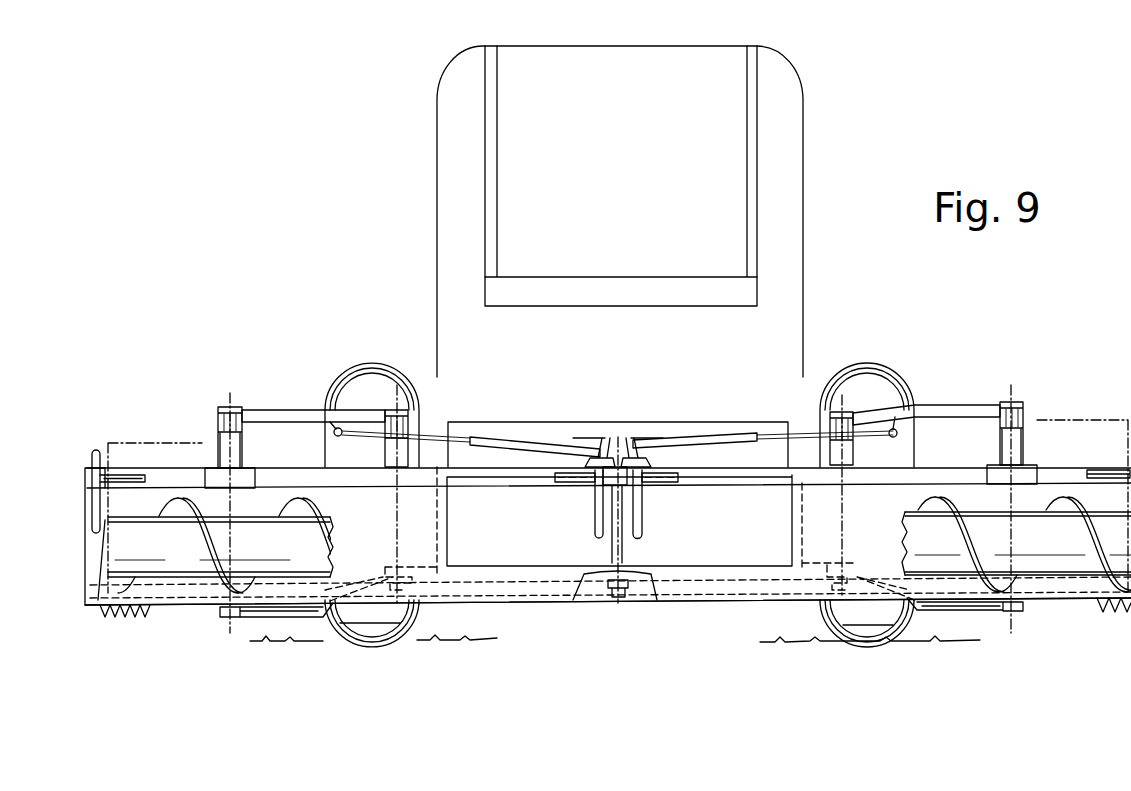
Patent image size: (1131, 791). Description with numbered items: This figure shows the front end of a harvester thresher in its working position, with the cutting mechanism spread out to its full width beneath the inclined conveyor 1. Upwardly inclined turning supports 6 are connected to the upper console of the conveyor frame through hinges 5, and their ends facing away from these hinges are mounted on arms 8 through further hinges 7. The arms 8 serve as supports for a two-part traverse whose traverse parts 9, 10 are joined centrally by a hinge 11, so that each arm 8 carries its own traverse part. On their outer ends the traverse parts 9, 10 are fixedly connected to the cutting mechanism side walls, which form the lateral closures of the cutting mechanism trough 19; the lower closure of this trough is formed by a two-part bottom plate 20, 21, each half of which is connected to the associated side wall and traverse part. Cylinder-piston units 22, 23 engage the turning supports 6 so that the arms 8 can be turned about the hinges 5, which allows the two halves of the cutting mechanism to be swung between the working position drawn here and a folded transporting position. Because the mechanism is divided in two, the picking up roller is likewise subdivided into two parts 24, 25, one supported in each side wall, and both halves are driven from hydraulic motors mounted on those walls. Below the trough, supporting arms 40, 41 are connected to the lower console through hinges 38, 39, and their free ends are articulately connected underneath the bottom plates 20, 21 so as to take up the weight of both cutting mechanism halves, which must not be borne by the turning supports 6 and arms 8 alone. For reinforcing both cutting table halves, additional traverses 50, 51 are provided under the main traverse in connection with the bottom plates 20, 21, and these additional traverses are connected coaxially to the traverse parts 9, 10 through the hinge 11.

The inclined conveyor 1 is at (692, 430).
The hinge 5 is at (390, 410).
The turning support 6 is at (287, 415).
The hinge 7 is at (218, 427).
The arm 8 is at (223, 458).
The traverse part 9 is at (953, 473).
The traverse part 10 is at (418, 477).
The hinge 11 is at (617, 465).
The cutting mechanism trough 19 is at (723, 610).
The bottom plate 20 is at (1067, 600).
The bottom plate 21 is at (462, 607).
The cylinder-piston unit 22 is at (735, 433).
The cylinder-piston unit 23 is at (520, 432).
The picking up roller part 24 is at (945, 565).
The picking up roller part 25 is at (193, 567).
The hinge 38 is at (840, 600).
The hinge 39 is at (397, 603).
The supporting arm 40 is at (960, 610).
The supporting arm 41 is at (290, 610).
The additional traverse 50 is at (640, 600).
The additional traverse 51 is at (590, 577).